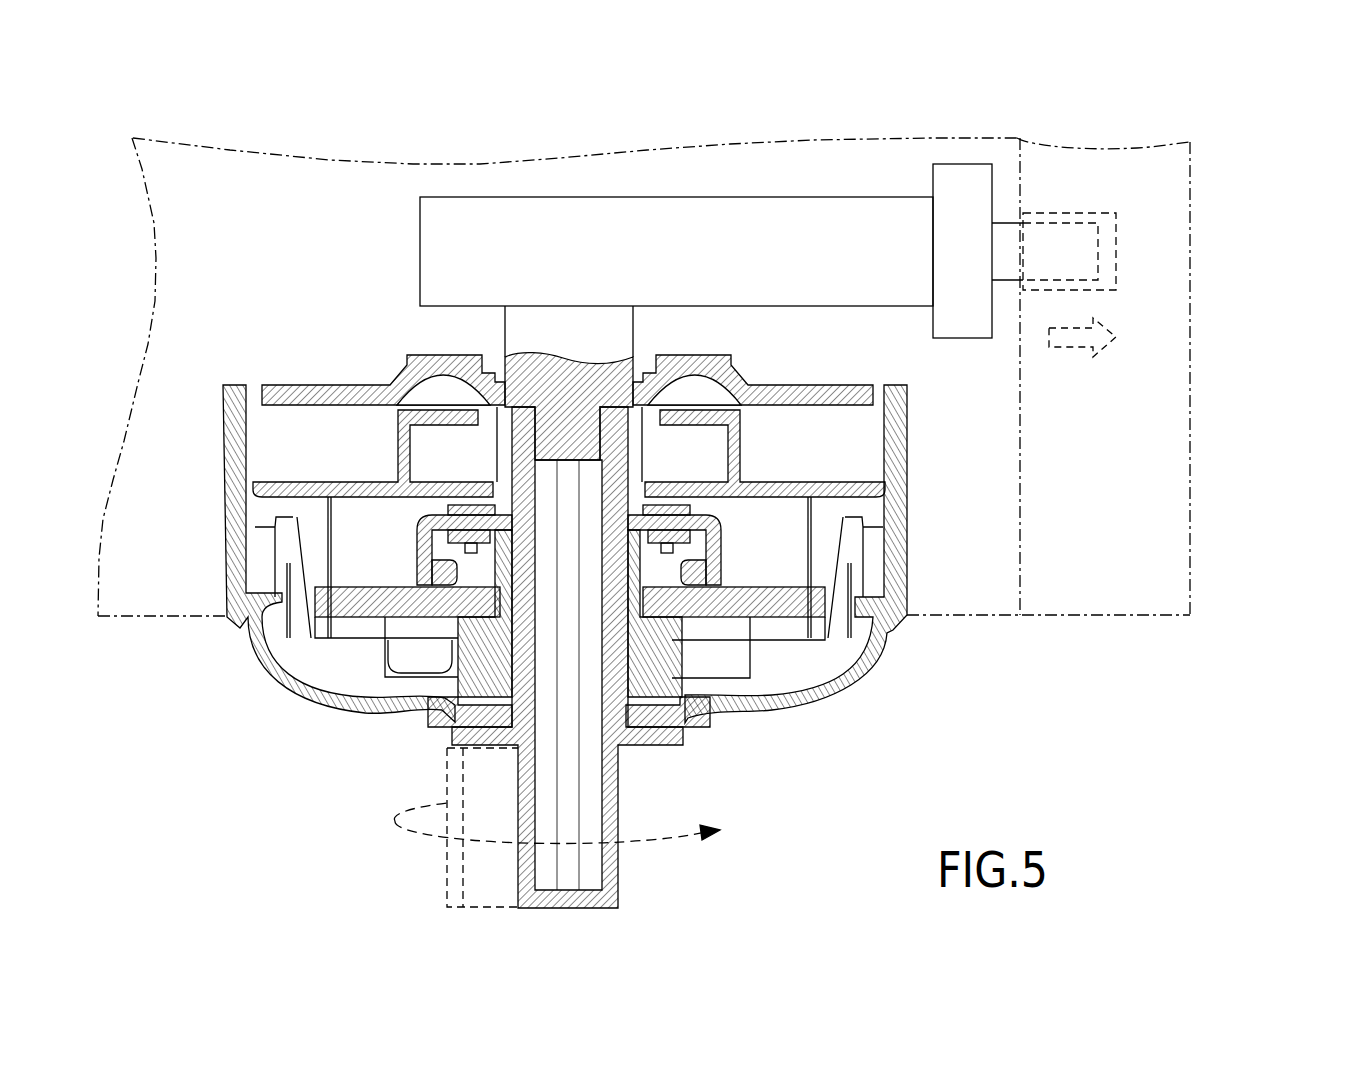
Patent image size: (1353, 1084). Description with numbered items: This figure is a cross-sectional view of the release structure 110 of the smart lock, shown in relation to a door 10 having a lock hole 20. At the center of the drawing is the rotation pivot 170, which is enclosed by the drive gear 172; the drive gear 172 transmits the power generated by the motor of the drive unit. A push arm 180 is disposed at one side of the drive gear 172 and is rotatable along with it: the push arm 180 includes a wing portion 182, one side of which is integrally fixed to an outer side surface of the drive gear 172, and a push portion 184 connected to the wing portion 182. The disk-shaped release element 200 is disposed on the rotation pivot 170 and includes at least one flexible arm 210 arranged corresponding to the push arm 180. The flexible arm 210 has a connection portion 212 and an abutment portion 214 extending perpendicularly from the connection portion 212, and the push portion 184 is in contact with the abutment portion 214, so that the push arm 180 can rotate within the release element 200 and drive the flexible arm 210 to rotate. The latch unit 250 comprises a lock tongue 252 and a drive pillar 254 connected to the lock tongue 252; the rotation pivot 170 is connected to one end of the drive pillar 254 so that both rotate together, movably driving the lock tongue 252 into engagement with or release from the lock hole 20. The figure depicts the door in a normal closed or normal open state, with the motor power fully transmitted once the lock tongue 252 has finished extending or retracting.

The door 10 is at (1168, 276).
The lock hole 20 is at (1113, 253).
The release structure 110 is at (755, 620).
The rotation pivot 170 is at (610, 647).
The drive gear 172 is at (880, 650).
The push arm 180 is at (273, 300).
The wing portion 182 is at (485, 570).
The push portion 184 is at (453, 552).
The release element 200 is at (402, 532).
The flexible arm 210 is at (233, 757).
The connection portion 212 is at (420, 548).
The abutment portion 214 is at (435, 578).
The latch unit 250 is at (1000, 328).
The lock tongue 252 is at (1067, 243).
The drive pillar 254 is at (566, 378).